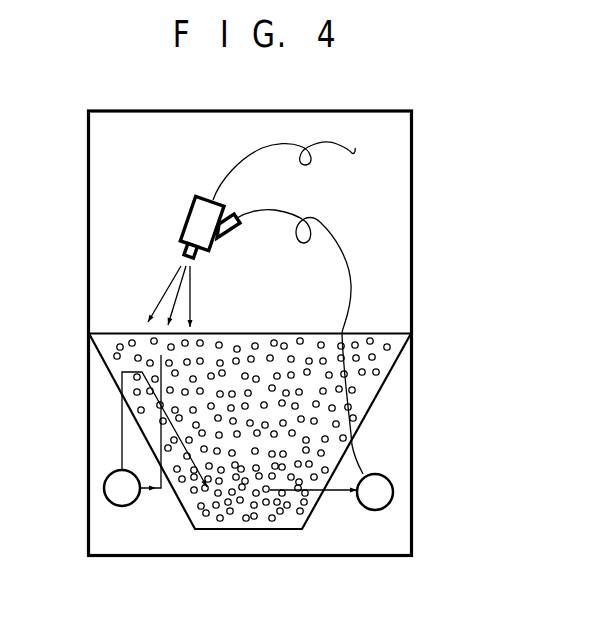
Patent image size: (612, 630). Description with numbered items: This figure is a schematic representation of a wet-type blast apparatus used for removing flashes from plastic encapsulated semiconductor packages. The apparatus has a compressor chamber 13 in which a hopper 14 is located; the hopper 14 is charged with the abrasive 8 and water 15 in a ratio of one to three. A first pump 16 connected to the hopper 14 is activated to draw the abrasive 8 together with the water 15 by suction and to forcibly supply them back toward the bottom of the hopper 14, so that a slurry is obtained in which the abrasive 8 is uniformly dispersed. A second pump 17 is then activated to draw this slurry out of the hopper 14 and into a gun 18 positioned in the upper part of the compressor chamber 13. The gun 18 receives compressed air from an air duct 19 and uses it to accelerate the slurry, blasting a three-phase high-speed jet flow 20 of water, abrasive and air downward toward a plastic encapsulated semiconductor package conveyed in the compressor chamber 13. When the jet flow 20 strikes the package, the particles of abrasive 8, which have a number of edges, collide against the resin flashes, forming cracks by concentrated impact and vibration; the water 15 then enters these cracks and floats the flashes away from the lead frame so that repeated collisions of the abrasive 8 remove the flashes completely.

The abrasive 8 is at (110, 360).
The compressor chamber 13 is at (85, 193).
The hopper 14 is at (393, 372).
The water 15 is at (332, 460).
The first pump 16 is at (104, 488).
The second pump 17 is at (393, 486).
The gun 18 is at (184, 220).
The air duct 19 is at (255, 158).
The three-phase high-speed jet flow 20 is at (163, 290).